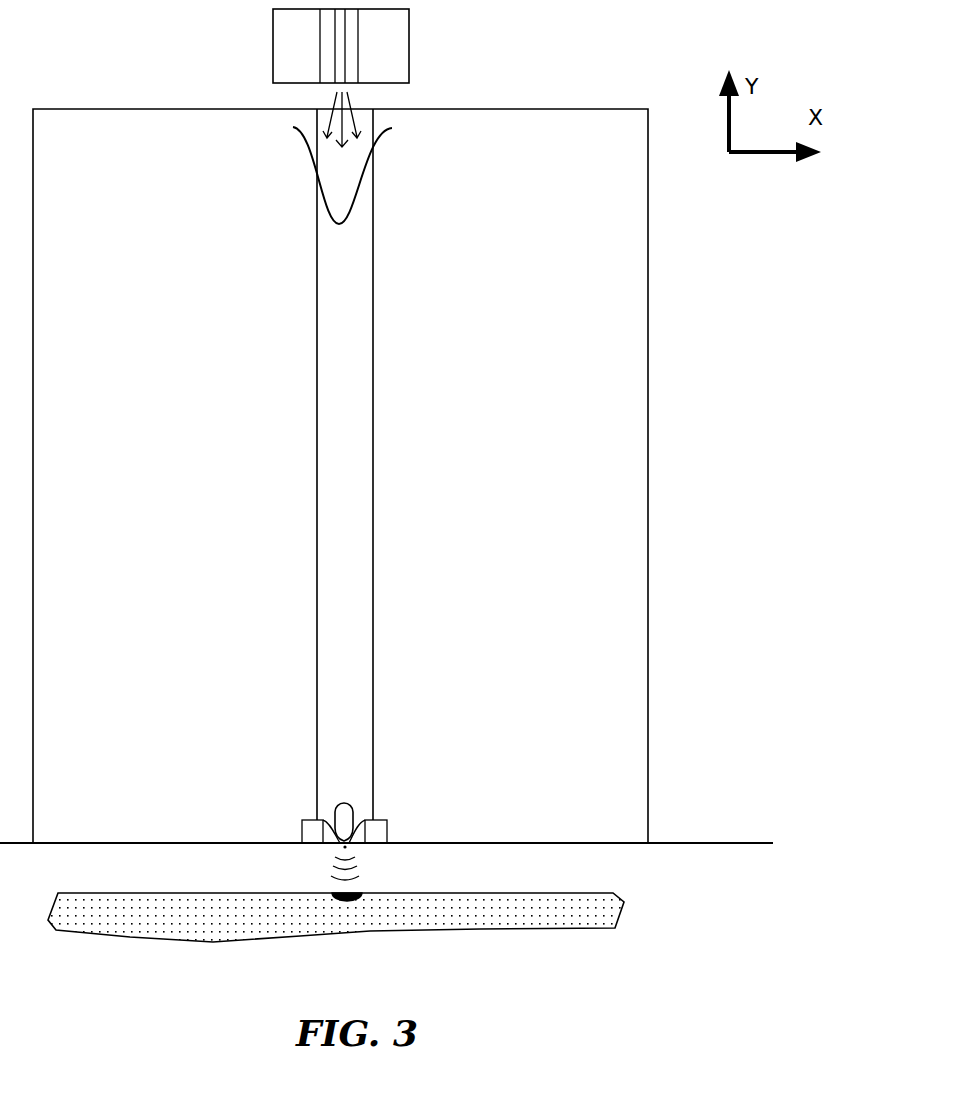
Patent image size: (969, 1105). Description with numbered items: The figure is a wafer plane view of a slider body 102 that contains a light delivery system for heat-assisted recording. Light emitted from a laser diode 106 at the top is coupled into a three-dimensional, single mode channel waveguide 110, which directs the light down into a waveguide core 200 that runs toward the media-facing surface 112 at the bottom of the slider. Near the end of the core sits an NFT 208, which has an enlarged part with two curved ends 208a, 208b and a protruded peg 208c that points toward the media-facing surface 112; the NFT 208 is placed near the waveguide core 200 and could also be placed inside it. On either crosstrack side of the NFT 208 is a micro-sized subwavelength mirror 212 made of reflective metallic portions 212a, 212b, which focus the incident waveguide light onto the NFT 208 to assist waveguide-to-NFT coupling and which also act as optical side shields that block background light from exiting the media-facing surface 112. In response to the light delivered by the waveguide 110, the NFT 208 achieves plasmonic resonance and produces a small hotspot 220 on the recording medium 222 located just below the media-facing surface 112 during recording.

The slider body 102 is at (539, 110).
The laser diode 106 is at (320, 37).
The channel waveguide 110 is at (226, 300).
The media-facing surface 112 is at (727, 845).
The waveguide core 200 is at (318, 659).
The NFT 208 is at (334, 814).
The curved end 208a is at (372, 805).
The curved end 208b is at (366, 845).
The protruded peg 208c is at (344, 845).
The subwavelength mirror 212 is at (370, 849).
The reflective metallic portion 212a is at (302, 828).
The reflective metallic portion 212b is at (388, 828).
The hotspot 220 is at (353, 895).
The recording medium 222 is at (577, 917).